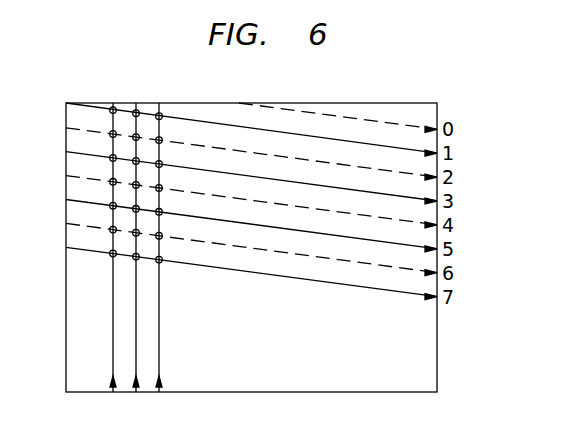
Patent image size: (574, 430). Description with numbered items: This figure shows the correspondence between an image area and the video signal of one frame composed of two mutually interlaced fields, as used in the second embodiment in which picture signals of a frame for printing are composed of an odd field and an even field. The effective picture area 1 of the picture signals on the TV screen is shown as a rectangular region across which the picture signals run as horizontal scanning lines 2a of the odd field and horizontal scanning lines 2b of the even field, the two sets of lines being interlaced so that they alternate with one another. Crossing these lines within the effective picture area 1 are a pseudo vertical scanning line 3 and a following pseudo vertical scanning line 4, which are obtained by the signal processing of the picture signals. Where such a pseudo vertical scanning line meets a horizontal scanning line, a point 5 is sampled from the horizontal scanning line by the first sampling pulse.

The effective picture area 1 is at (410, 103).
The horizontal scanning lines of an odd field 2a is at (308, 136).
The horizontal scanning lines of an even field 2b is at (384, 122).
The pseudo vertical scanning line 3 is at (112, 334).
The pseudo vertical scanning line 4 is at (136, 334).
The sampled point 5 is at (110, 256).